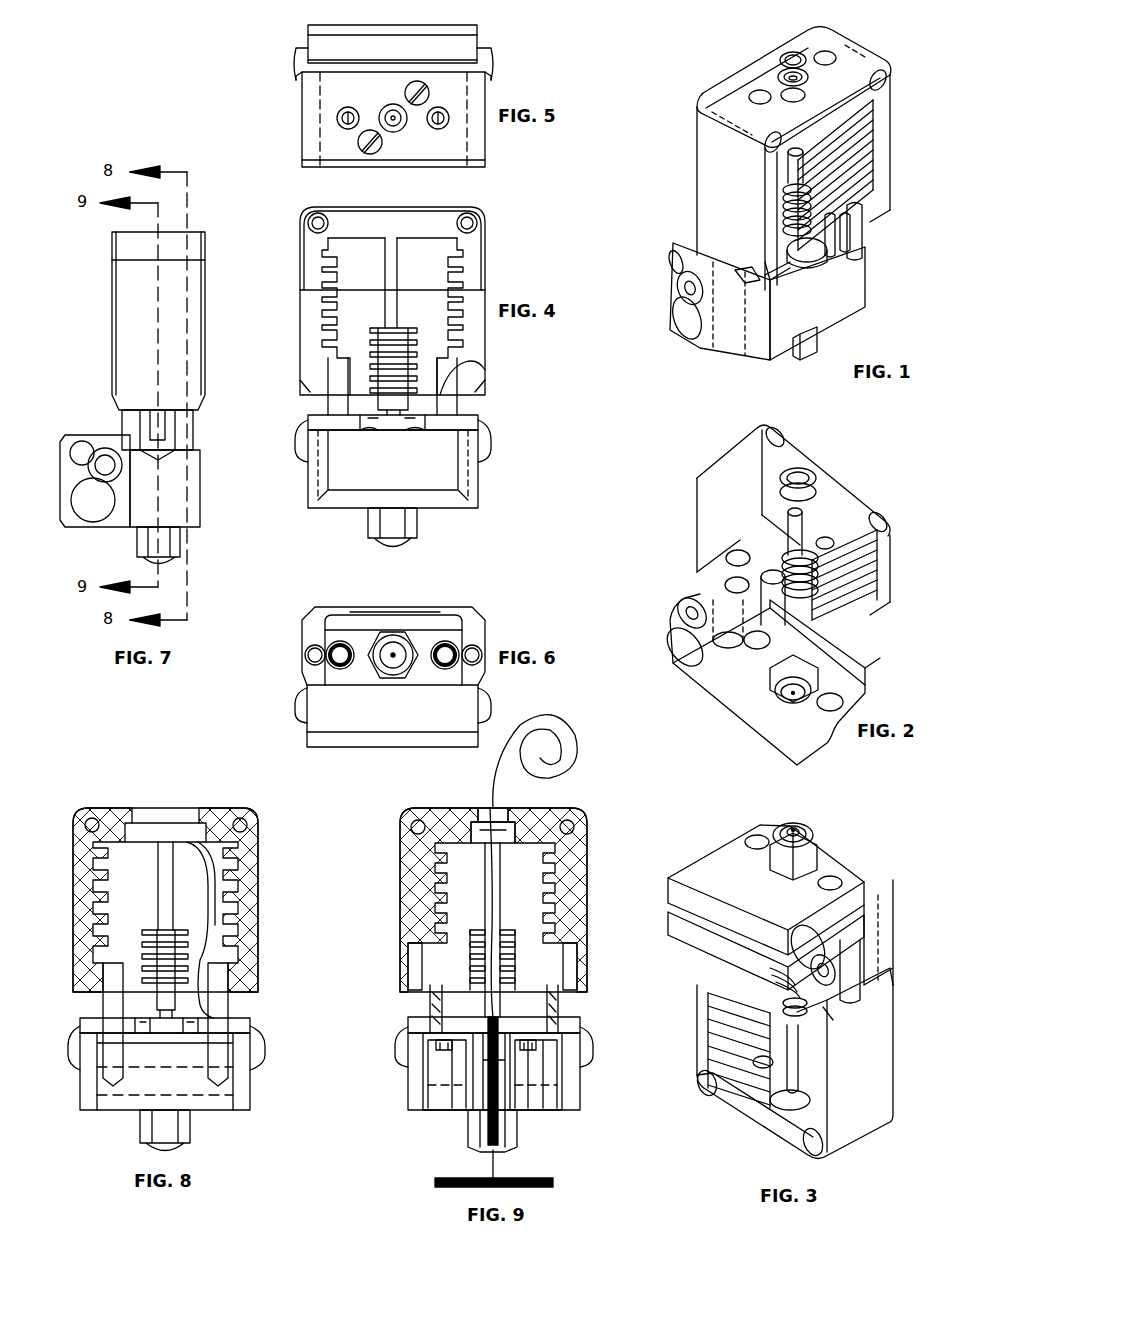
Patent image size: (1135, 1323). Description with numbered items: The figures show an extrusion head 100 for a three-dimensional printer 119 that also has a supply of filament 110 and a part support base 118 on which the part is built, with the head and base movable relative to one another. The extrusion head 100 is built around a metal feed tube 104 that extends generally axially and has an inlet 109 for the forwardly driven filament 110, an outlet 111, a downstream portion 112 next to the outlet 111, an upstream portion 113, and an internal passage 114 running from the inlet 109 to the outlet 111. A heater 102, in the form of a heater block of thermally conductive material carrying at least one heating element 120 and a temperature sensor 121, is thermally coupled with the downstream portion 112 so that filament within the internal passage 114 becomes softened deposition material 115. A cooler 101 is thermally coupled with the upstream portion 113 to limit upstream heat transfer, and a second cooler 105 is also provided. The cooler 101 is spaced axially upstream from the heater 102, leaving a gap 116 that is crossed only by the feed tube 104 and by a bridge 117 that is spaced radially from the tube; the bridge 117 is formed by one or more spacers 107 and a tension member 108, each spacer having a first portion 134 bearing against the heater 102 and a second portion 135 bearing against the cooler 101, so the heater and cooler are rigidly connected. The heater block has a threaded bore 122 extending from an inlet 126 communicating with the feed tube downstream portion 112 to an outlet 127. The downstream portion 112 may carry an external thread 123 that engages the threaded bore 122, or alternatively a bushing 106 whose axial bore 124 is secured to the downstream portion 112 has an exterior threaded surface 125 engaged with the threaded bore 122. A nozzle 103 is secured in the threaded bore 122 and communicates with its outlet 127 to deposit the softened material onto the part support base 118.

In FIG. 1, the extrusion head 100 is at (680, 58).
In FIG. 4, the cooler 101 is at (480, 262).
In FIG. 1, the cooler 101 is at (745, 196).
In FIG. 4, the heater 102 is at (470, 495).
In FIG. 1, the heater 102 is at (836, 310).
In FIG. 4, the nozzle 103 is at (412, 528).
In FIG. 1, the nozzle 103 is at (815, 345).
In FIG. 9, the feed tube 104 is at (490, 900).
In FIG. 1, the feed tube 104 is at (790, 162).
In FIG. 9, the second cooler 105 is at (472, 933).
In FIG. 1, the second cooler 105 is at (830, 180).
In FIG. 9, the bushing 106 is at (425, 960).
In FIG. 1, the bushing 106 is at (820, 265).
In FIG. 8, the spacer 107 is at (222, 1012).
In FIG. 1, the spacer 107 is at (855, 240).
In FIG. 9, the tension member 108 is at (468, 1090).
In FIG. 1, the tension member 108 is at (850, 232).
In FIG. 9, the filament inlet 109 is at (485, 815).
In FIG. 9, the filament 110 is at (570, 728).
In FIG. 9, the outlet 111 is at (498, 1050).
In FIG. 9, the downstream portion 112 is at (440, 1018).
In FIG. 9, the upstream portion 113 is at (508, 833).
In FIG. 9, the internal passage 114 is at (494, 895).
In FIG. 9, the softened deposition material 115 is at (490, 1135).
In FIG. 8, the gap 116 is at (214, 930).
In FIG. 8, the bridge 117 is at (110, 1005).
In FIG. 9, the part support base 118 is at (540, 1178).
In FIG. 9, the three-dimensional printer 119 is at (603, 840).
In FIG. 3, the heating element 120 is at (810, 945).
In FIG. 3, the temperature sensor 121 is at (790, 990).
In FIG. 9, the threaded bore 122 is at (510, 1120).
In FIG. 9, the external thread 123 is at (462, 1062).
In FIG. 9, the axial bore 124 is at (478, 1056).
In FIG. 9, the exterior threaded surface 125 is at (465, 1060).
In FIG. 9, the inlet 126 is at (475, 1040).
In FIG. 9, the outlet 127 is at (500, 1062).
In FIG. 4, the first portion 134 is at (462, 432).
In FIG. 4, the second portion 135 is at (470, 372).